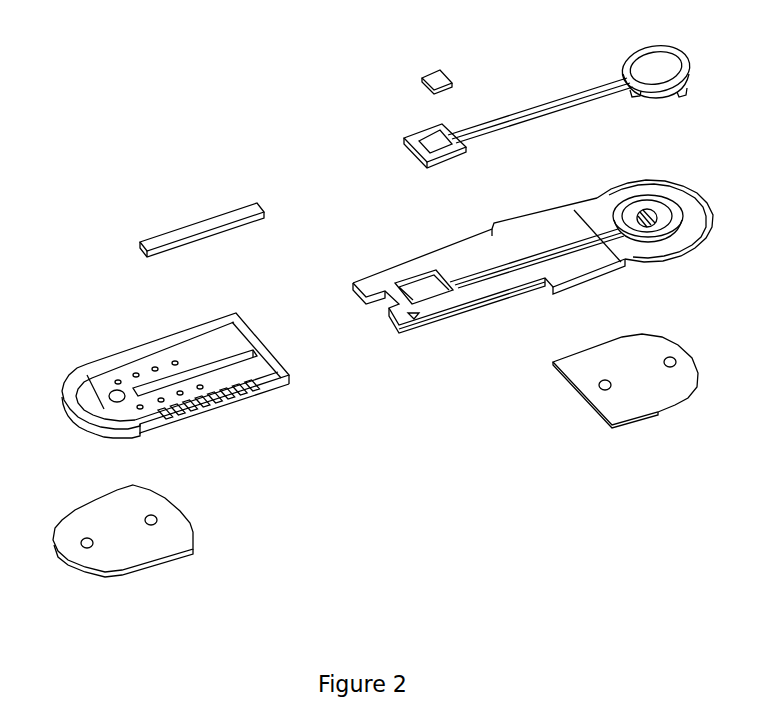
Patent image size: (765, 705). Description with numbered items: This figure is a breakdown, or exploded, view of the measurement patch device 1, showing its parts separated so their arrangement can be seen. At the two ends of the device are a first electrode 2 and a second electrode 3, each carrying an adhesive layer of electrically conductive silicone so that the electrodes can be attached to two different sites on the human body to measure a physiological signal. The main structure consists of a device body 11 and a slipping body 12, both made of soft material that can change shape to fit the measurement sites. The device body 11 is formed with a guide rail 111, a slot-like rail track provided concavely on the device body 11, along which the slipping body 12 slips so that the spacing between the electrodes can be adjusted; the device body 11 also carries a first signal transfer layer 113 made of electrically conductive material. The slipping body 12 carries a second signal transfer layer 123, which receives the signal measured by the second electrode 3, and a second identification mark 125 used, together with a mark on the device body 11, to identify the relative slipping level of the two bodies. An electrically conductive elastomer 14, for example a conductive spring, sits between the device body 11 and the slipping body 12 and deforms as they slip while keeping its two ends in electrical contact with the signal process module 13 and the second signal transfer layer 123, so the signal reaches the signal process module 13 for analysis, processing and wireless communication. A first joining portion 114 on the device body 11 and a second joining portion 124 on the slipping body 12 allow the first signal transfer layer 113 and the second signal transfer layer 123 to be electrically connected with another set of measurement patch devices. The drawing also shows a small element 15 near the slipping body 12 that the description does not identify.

The measurement patch device 1 is at (93, 98).
The device body 11 is at (114, 352).
The guide rail 111 is at (240, 323).
The first signal transfer layer 113 is at (231, 204).
The first joining portion 114 is at (109, 396).
The second identification mark 125 is at (208, 397).
The slipping body 12 is at (537, 215).
The second signal transfer layer 123 is at (524, 109).
The second joining portion 124 is at (657, 217).
The signal process module 13 is at (442, 72).
The electrically conductive elastomer 14 is at (427, 165).
The tab 15 is at (410, 325).
The first electrode 2 is at (115, 572).
The second electrode 3 is at (678, 398).